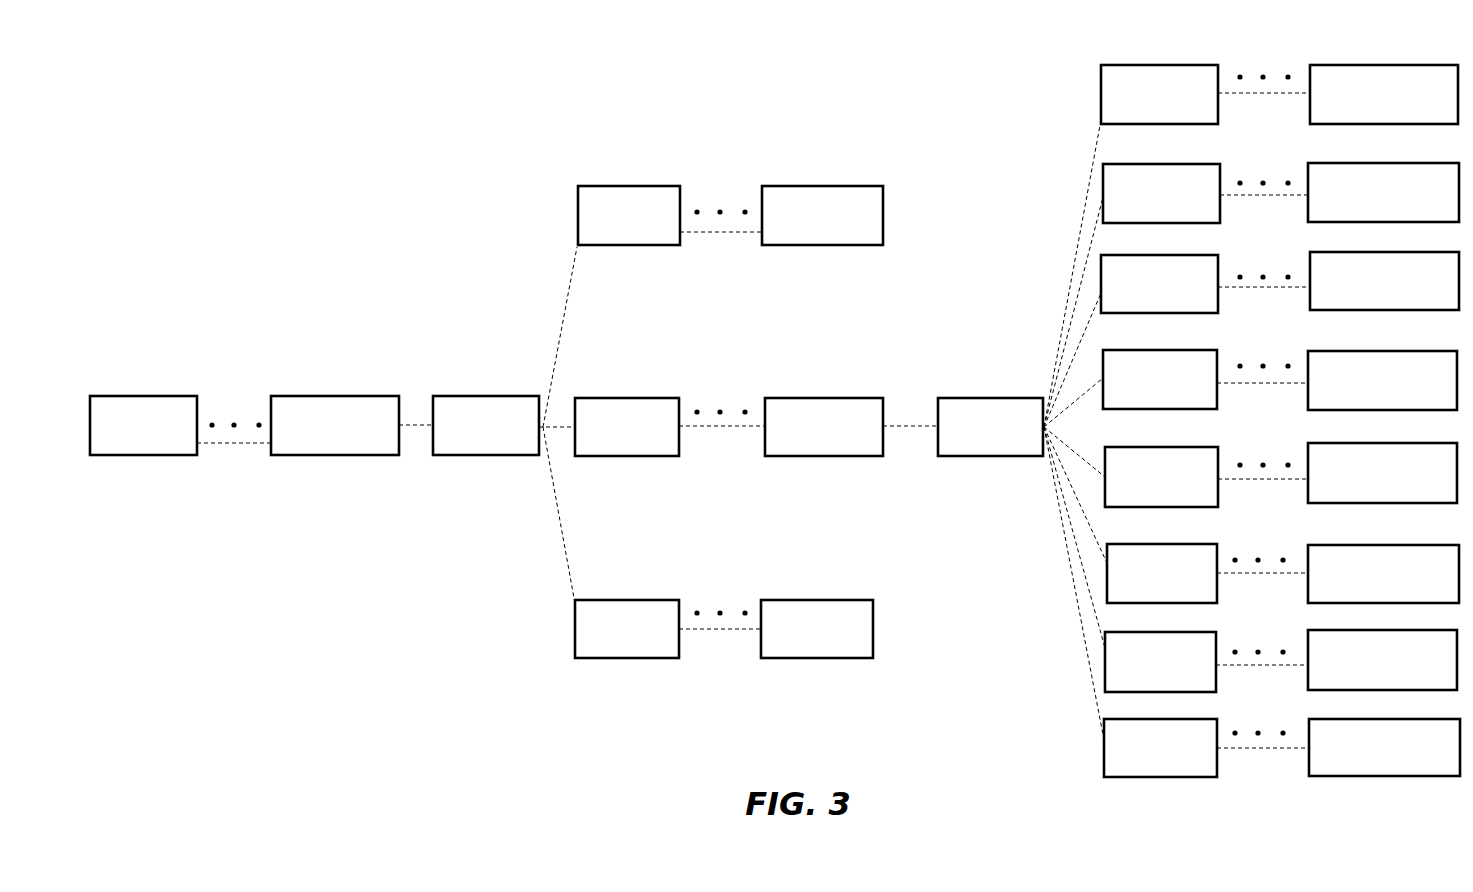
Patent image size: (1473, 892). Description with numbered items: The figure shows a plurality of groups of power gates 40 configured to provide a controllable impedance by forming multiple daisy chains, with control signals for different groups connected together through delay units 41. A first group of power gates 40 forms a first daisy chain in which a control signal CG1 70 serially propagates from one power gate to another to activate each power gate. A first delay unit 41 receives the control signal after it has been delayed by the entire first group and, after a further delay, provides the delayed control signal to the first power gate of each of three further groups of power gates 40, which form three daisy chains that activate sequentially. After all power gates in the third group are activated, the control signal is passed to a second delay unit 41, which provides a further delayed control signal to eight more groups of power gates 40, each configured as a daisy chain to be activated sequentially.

The power gate 40 is at (302, 61).
The delay unit 41 is at (753, 430).
The control signal CG1 70 is at (117, 395).